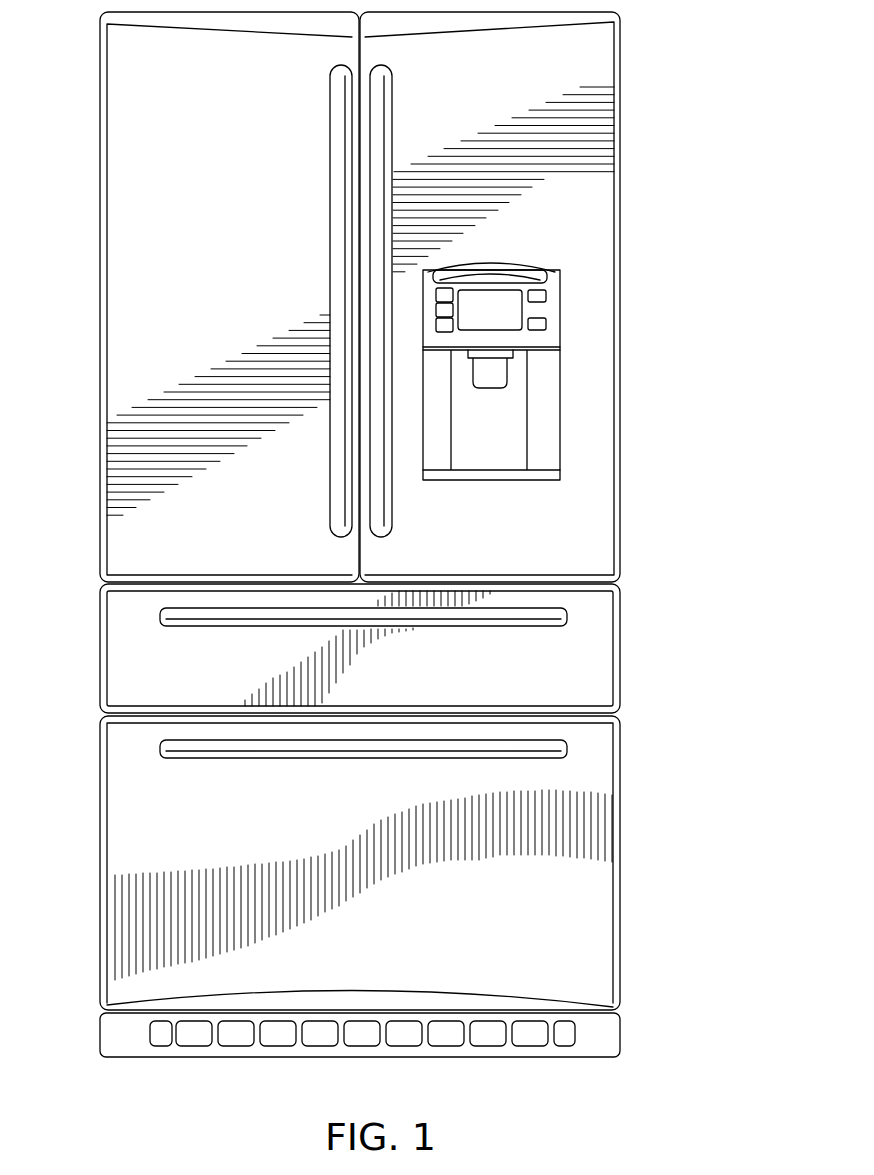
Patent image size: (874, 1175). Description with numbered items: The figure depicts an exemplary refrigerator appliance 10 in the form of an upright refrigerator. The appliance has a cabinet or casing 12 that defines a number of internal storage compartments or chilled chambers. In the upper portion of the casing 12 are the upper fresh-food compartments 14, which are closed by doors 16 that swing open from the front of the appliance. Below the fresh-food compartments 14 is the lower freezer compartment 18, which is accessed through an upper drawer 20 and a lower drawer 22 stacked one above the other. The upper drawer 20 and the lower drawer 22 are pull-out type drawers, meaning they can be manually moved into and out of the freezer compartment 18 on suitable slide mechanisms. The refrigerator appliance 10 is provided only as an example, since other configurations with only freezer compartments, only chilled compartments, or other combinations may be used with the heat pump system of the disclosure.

The refrigerator appliance 10 is at (391, 534).
The cabinet or casing 12 is at (620, 497).
The upper fresh-food compartments 14 is at (142, 207).
The doors 16 is at (262, 496).
The lower freezer compartment 18 is at (400, 797).
The upper drawer 20 is at (206, 681).
The lower drawer 22 is at (463, 944).